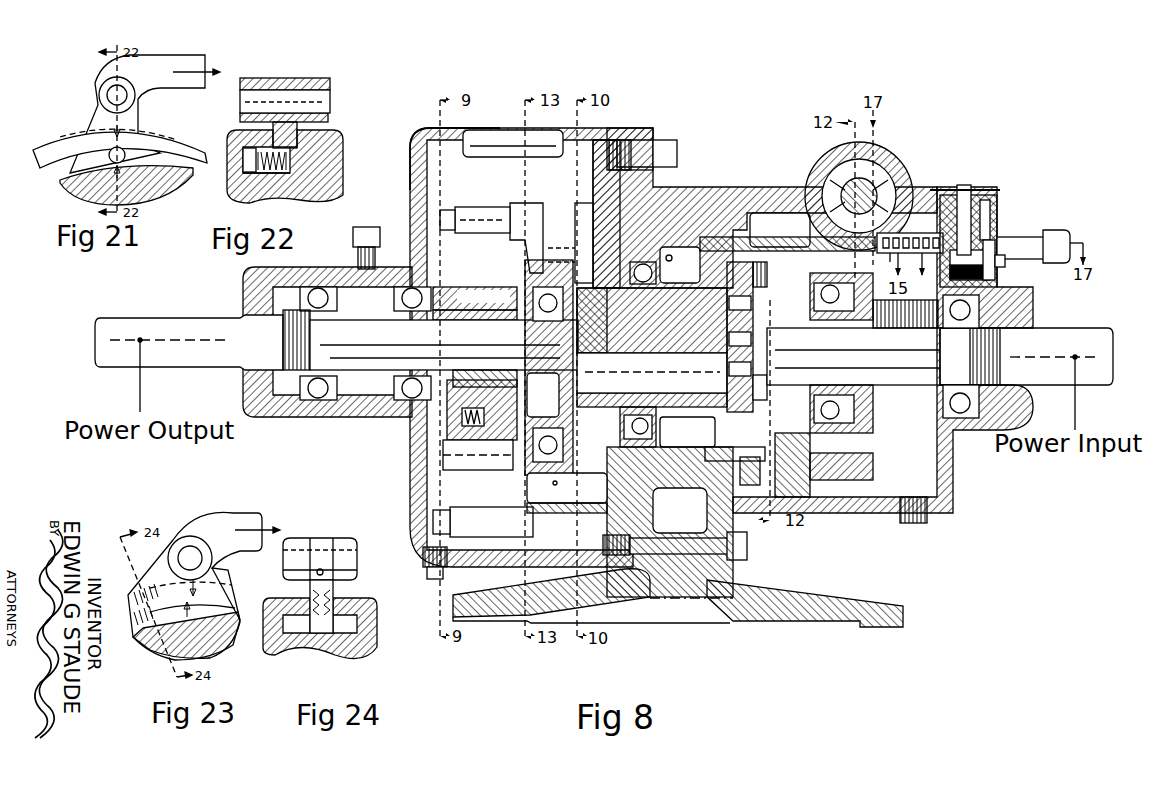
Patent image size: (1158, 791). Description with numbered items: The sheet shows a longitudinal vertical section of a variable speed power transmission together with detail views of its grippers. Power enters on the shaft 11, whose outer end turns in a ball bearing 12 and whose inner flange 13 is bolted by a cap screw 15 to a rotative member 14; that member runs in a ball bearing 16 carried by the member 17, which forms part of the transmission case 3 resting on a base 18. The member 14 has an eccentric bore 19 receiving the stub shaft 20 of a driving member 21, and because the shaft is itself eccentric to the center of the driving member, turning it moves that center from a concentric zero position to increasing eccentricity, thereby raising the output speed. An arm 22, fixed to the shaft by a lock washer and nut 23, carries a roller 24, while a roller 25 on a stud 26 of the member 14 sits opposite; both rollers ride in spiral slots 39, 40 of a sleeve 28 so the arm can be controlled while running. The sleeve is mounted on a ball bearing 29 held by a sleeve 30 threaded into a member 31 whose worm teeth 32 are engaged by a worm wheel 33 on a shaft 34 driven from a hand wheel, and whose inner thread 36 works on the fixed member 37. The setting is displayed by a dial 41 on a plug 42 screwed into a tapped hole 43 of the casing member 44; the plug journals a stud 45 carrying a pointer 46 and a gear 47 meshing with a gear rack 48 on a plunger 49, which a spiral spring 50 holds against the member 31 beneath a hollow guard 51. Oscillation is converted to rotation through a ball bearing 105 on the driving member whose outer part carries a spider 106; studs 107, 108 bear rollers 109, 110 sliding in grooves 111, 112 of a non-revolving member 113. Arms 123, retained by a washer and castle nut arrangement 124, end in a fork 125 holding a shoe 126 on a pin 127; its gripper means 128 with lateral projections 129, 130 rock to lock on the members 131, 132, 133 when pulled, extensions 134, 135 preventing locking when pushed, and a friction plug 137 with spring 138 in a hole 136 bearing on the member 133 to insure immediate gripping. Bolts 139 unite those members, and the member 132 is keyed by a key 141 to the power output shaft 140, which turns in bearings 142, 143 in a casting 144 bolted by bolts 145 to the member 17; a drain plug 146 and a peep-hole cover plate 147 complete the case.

In FIG. 8, the transmission case 3 is at (706, 195).
In FIG. 8, the shaft 11 is at (1040, 350).
In FIG. 8, the ball bearing 12 is at (962, 413).
In FIG. 8, the flange 13 is at (796, 353).
In FIG. 8, the member 14 is at (652, 347).
In FIG. 8, the cap screw 15 is at (641, 258).
In FIG. 8, the ball bearing 16 is at (655, 250).
In FIG. 8, the member 17 is at (706, 212).
In FIG. 8, the base 18 is at (800, 635).
In FIG. 8, the bore 19 is at (650, 342).
In FIG. 8, the stub shaft 20 is at (652, 373).
In FIG. 8, the driving member 21 is at (549, 367).
In FIG. 8, the arm 22 is at (740, 337).
In FIG. 8, the lock washer and nut 23 is at (758, 384).
In FIG. 8, the roller 24 is at (749, 287).
In FIG. 8, the roller 25 is at (735, 452).
In FIG. 8, the stud 26 is at (768, 470).
In FIG. 8, the sleeve 28 is at (800, 465).
In FIG. 8, the ball bearing 29 is at (842, 298).
In FIG. 8, the sleeve 30 is at (852, 322).
In FIG. 8, the member 31 is at (868, 413).
In FIG. 8, the worm teeth 32 is at (864, 482).
In FIG. 8, the worm wheel 33 is at (876, 186).
In FIG. 8, the shaft 34 is at (870, 200).
In FIG. 8, the thread 36 is at (843, 475).
In FIG. 8, the member 37 is at (670, 522).
In FIG. 8, the spiral slot 39 is at (667, 427).
In FIG. 8, the spiral slot 40 is at (767, 260).
In FIG. 8, the dial 41 is at (986, 203).
In FIG. 8, the plug 42 is at (990, 215).
In FIG. 8, the tapped hole 43 is at (996, 220).
In FIG. 8, the casing member 44 is at (954, 482).
In FIG. 8, the stud 45 is at (961, 195).
In FIG. 8, the pointer 46 is at (985, 188).
In FIG. 8, the gear 47 is at (1002, 235).
In FIG. 8, the gear rack 48 is at (910, 234).
In FIG. 8, the plunger 49 is at (895, 253).
In FIG. 8, the spiral spring 50 is at (999, 260).
In FIG. 8, the hollow guard 51 is at (1055, 242).
In FIG. 8, the ball bearing 105 is at (502, 470).
In FIG. 8, the spider 106 is at (532, 212).
In FIG. 8, the stud 107 is at (548, 504).
In FIG. 8, the stud 108 is at (566, 247).
In FIG. 8, the roller 109 is at (576, 503).
In FIG. 8, the roller 110 is at (586, 215).
In FIG. 8, the groove 111 is at (608, 180).
In FIG. 8, the groove 112 is at (675, 522).
In FIG. 8, the member 113 is at (622, 152).
In FIG. 8, the arm 123 is at (487, 215).
In FIG. 21, the arm 123 is at (176, 55).
In FIG. 23, the arm 123 is at (246, 520).
In FIG. 8, the washer and castle nut arrangement 124 is at (448, 215).
In FIG. 22, the fork 125 is at (300, 78).
In FIG. 24, the fork 125 is at (340, 545).
In FIG. 21, the shoe 126 is at (108, 148).
In FIG. 22, the pin 127 is at (324, 96).
In FIG. 21, the gripper means 128 is at (130, 150).
In FIG. 22, the lateral projection 129 is at (330, 134).
In FIG. 22, the lateral projection 130 is at (233, 136).
In FIG. 8, the member 131 is at (466, 458).
In FIG. 21, the member 131 is at (63, 141).
In FIG. 22, the member 131 is at (341, 143).
In FIG. 24, the member 131 is at (373, 630).
In FIG. 8, the member 132 is at (485, 356).
In FIG. 21, the member 132 is at (78, 197).
In FIG. 22, the member 132 is at (320, 183).
In FIG. 24, the member 132 is at (303, 650).
In FIG. 8, the member 133 is at (438, 430).
In FIG. 22, the member 133 is at (233, 192).
In FIG. 24, the member 133 is at (275, 648).
In FIG. 21, the extension 134 is at (155, 153).
In FIG. 21, the extension 135 is at (70, 168).
In FIG. 21, the hole 136 is at (110, 150).
In FIG. 22, the hole 136 is at (275, 172).
In FIG. 22, the friction plug 137 is at (252, 172).
In FIG. 24, the friction plug 137 is at (336, 642).
In FIG. 22, the spring 138 is at (290, 173).
In FIG. 24, the spring 138 is at (345, 600).
In FIG. 8, the bolt 139 is at (475, 303).
In FIG. 8, the power output shaft 140 is at (336, 340).
In FIG. 8, the key 141 is at (462, 370).
In FIG. 8, the bearing 142 is at (406, 398).
In FIG. 8, the bearing 143 is at (318, 398).
In FIG. 8, the casting 144 is at (420, 492).
In FIG. 8, the bolt 145 is at (665, 150).
In FIG. 8, the drain plug 146 is at (448, 578).
In FIG. 8, the peep-hole cover plate 147 is at (497, 130).